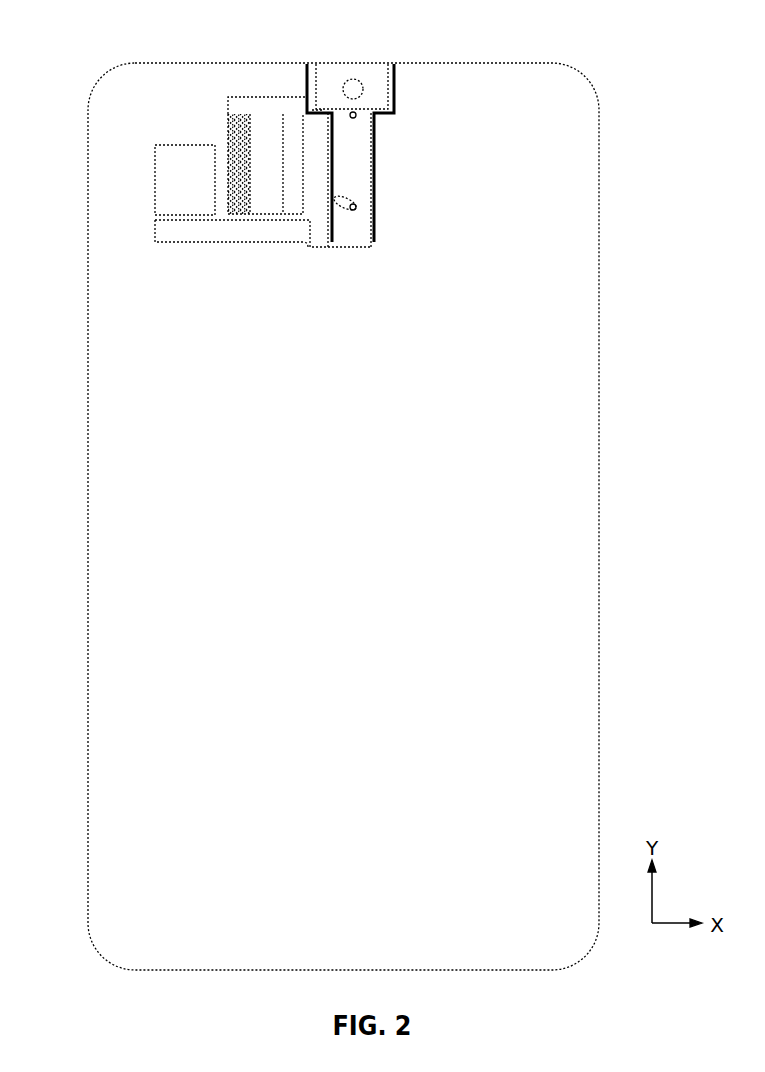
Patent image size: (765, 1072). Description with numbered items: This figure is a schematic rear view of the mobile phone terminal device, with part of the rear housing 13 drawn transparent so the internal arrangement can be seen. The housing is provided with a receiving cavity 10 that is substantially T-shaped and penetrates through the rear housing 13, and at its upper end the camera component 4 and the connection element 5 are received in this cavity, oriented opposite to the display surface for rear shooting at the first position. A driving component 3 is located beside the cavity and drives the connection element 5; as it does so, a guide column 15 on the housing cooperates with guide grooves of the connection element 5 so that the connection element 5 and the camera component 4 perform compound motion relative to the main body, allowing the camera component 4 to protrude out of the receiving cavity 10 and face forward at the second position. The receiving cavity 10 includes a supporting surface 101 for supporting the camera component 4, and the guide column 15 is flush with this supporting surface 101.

The rear housing 13 is at (135, 465).
The driving component 3 is at (175, 215).
The receiving cavity 10 is at (375, 157).
The camera component 4 is at (372, 87).
The connection element 5 is at (360, 228).
The supporting surface 101 is at (318, 110).
The guide column 15 is at (352, 112).